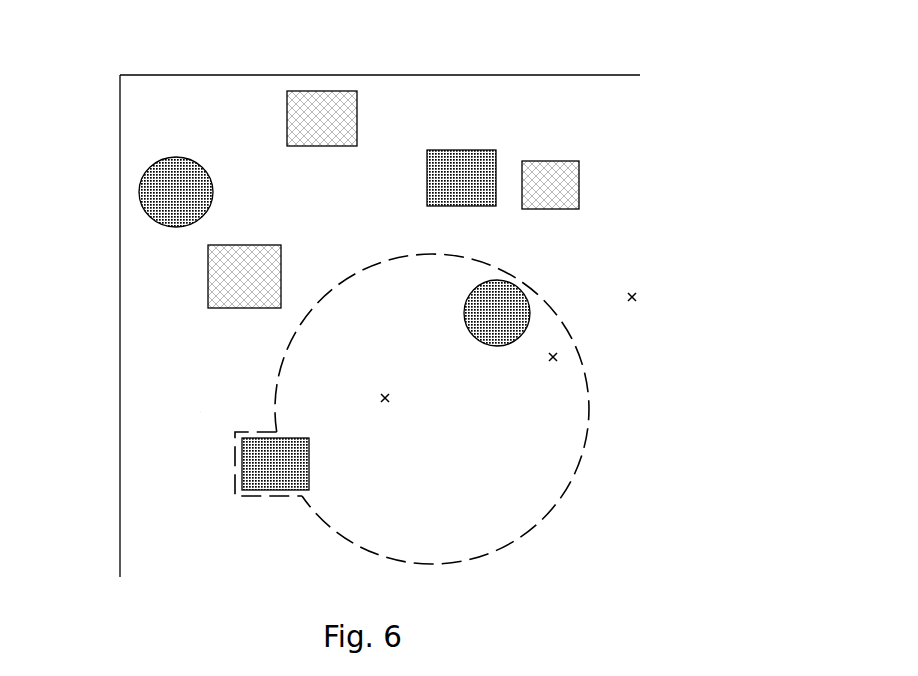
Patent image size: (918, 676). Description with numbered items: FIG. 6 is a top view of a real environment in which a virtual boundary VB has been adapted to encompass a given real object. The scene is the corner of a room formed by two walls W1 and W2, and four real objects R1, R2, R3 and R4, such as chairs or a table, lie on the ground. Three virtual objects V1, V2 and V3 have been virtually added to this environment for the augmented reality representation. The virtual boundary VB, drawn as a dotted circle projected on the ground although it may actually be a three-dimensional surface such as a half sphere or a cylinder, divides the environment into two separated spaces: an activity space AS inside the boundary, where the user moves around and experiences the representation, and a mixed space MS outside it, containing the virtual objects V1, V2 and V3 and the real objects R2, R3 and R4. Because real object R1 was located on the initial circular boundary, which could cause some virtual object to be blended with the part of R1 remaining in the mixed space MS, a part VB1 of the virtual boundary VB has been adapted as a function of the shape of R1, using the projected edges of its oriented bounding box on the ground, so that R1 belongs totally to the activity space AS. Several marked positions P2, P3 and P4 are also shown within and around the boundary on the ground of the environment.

The wall W1 is at (119, 215).
The wall W2 is at (222, 75).
The virtual object V1 is at (244, 276).
The virtual object V2 is at (322, 118).
The virtual object V3 is at (550, 185).
The real object R1 is at (275, 464).
The real object R2 is at (497, 313).
The real object R3 is at (176, 192).
The real object R4 is at (461, 178).
The mixed space MS is at (198, 410).
The virtual boundary VB is at (578, 480).
The part of the virtual boundary VB1 is at (233, 482).
The activity space AS is at (496, 540).
The second position P2 is at (380, 410).
The third position P3 is at (551, 367).
The fourth position P4 is at (629, 306).